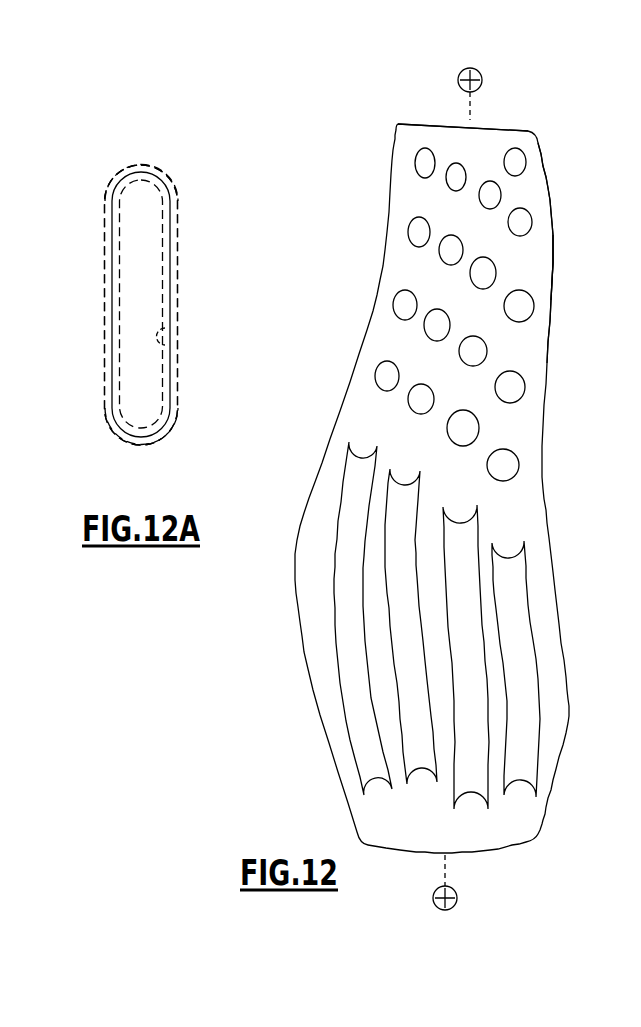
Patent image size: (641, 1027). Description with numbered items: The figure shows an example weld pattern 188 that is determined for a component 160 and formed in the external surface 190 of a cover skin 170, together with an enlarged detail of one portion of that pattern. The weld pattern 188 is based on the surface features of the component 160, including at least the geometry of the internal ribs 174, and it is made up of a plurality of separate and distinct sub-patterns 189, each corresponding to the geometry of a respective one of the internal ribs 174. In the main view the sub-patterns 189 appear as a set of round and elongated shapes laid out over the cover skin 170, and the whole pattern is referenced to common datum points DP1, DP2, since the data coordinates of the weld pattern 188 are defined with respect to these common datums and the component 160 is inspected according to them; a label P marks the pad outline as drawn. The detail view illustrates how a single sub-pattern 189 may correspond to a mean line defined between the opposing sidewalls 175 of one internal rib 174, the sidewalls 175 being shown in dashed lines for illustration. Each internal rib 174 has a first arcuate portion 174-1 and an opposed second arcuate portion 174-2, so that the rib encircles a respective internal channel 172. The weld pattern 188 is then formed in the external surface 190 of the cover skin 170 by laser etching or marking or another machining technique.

In FIG. 12, the component 160 is at (376, 93).
In FIG. 12, the cover skin 170 is at (435, 118).
In FIG. 12A, the internal channel 172 is at (180, 337).
In FIG. 12A, the internal rib 174 is at (128, 167).
In FIG. 12A, the first arcuate portion 174-1 is at (154, 165).
In FIG. 12A, the second arcuate portion 174-2 is at (122, 444).
In FIG. 12A, the sidewall 175 is at (120, 287).
In FIG. 12, the weld pattern 188 is at (410, 200).
In FIG. 12A, the weld pattern 188 is at (108, 116).
In FIG. 12, the sub-pattern 189 is at (526, 168).
In FIG. 12A, the sub-pattern 189 is at (172, 230).
In FIG. 12, the external surface 190 is at (545, 297).
In FIG. 12, the plane P is at (553, 264).
In FIG. 12, the datum point DP1 is at (484, 72).
In FIG. 12, the datum point DP2 is at (433, 900).